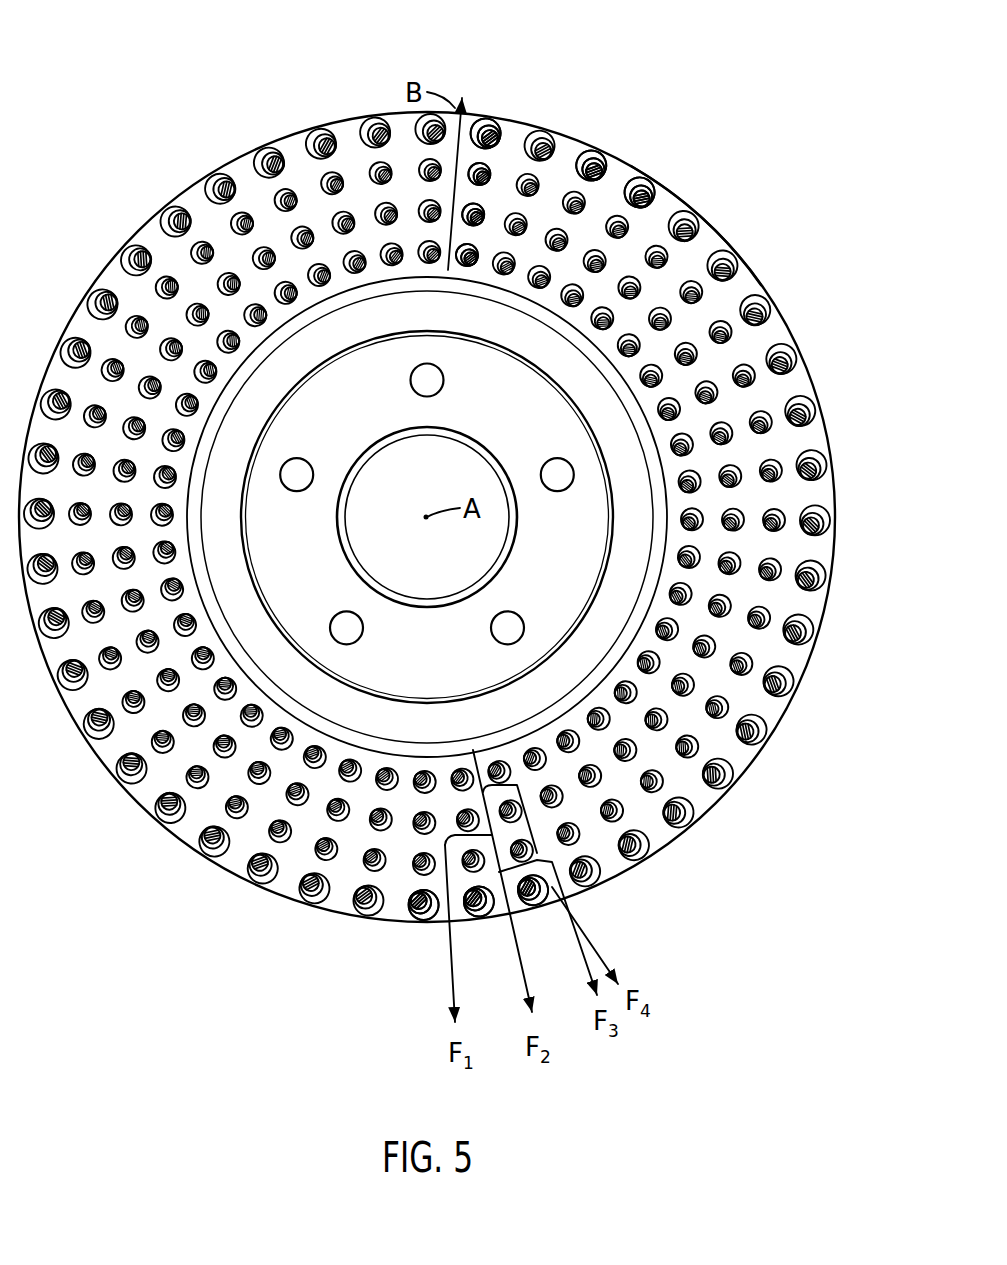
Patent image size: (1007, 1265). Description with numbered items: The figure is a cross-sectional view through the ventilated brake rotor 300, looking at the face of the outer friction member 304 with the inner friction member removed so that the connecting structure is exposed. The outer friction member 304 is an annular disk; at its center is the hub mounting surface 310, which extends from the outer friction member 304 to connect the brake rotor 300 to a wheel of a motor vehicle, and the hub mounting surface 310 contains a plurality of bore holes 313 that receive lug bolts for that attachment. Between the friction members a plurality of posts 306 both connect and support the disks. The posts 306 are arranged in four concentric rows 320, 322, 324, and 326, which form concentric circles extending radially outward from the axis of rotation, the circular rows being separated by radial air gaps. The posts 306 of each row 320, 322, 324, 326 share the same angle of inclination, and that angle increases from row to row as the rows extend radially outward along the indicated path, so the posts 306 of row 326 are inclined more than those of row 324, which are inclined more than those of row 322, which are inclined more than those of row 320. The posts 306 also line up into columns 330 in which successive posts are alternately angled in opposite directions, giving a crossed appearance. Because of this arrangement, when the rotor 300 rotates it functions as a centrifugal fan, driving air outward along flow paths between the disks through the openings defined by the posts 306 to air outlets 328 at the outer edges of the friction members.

The ventilated brake rotor 300 is at (172, 58).
The outer friction member 304 is at (788, 337).
The posts 306 is at (598, 163).
The hub mounting surface 310 is at (540, 567).
The bore holes 313 is at (418, 385).
The row 320 is at (473, 258).
The row 322 is at (486, 212).
The row 324 is at (489, 172).
The row 326 is at (485, 131).
The air outlets 328 is at (440, 907).
The columns 330 is at (702, 204).